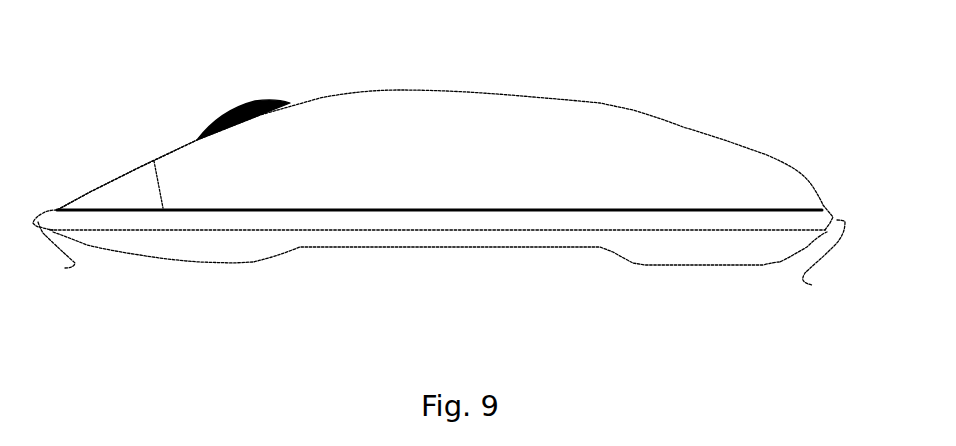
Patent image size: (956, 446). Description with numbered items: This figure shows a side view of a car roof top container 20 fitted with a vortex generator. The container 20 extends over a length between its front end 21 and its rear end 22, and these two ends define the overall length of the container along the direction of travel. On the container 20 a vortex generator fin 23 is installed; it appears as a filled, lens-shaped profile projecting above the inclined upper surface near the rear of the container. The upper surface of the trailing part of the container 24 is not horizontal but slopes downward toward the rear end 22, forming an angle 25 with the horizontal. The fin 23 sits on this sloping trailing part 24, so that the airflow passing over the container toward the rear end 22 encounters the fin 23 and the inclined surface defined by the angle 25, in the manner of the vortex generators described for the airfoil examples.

The car roof top container 20 is at (520, 65).
The front end 21 is at (824, 257).
The rear end 22 is at (55, 250).
The vortex generator fin 23 is at (248, 103).
The trailing part of the container 24 is at (107, 180).
The angle 25 is at (167, 190).